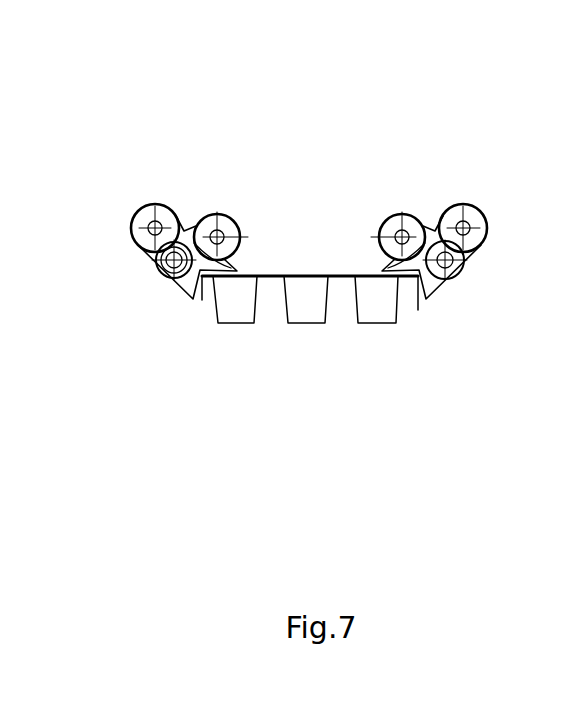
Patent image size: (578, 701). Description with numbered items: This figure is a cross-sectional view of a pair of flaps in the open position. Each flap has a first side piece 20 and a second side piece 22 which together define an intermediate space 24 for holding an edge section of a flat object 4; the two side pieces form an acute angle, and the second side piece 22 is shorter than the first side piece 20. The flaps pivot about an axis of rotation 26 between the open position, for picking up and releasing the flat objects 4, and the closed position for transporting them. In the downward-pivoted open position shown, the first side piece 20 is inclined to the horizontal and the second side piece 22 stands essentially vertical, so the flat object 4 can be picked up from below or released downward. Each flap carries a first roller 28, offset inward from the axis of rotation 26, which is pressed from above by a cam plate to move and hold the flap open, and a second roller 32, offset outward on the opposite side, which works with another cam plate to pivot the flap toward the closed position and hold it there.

The flat object 4 is at (305, 308).
The first side piece 20 is at (205, 237).
The second side piece 22 is at (190, 288).
The intermediate space 24 is at (418, 310).
The axis of rotation 26 is at (158, 273).
The first roller 28 is at (397, 233).
The second roller 32 is at (472, 215).